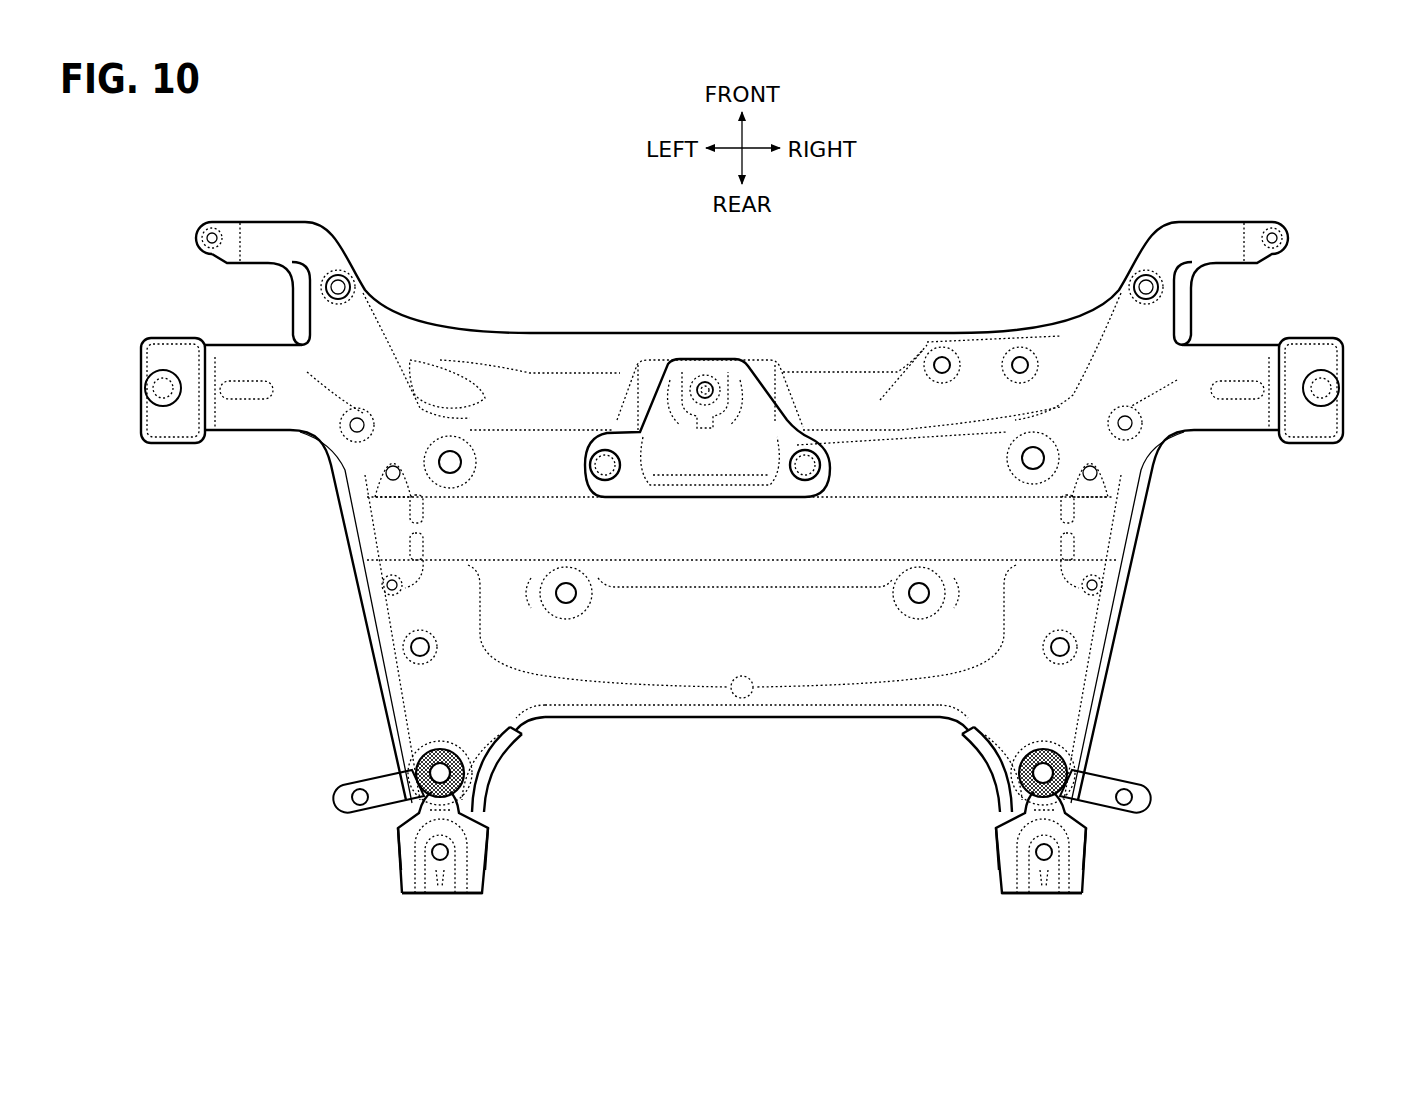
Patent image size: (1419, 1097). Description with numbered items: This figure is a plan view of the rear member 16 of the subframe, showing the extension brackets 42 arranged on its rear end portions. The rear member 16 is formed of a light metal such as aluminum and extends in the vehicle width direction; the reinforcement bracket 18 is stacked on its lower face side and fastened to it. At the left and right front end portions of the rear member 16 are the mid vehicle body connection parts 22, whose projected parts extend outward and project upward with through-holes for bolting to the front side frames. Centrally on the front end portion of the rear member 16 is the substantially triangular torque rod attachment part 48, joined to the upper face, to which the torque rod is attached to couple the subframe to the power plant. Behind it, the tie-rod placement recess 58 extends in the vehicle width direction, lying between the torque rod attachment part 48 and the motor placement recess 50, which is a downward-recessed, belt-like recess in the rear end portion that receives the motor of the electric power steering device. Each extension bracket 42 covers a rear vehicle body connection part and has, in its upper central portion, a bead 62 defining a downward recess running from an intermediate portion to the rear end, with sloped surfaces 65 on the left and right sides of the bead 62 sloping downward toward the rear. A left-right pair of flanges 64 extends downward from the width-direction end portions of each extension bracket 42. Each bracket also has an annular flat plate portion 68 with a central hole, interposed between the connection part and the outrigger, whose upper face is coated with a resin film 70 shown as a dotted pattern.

The rear member 16 is at (926, 313).
The reinforcement bracket 18 is at (1141, 593).
The mid vehicle body connection parts 22 is at (160, 384).
The extension bracket 42 is at (406, 905).
The torque rod attachment part 48 is at (708, 353).
The motor placement recess 50 is at (714, 637).
The tie-rod placement recess 58 is at (548, 530).
The bead 62 is at (441, 897).
The flanges 64 is at (401, 880).
The sloped surfaces 65 is at (406, 843).
The flat plate portion 68 is at (433, 742).
The resin film 70 is at (479, 778).